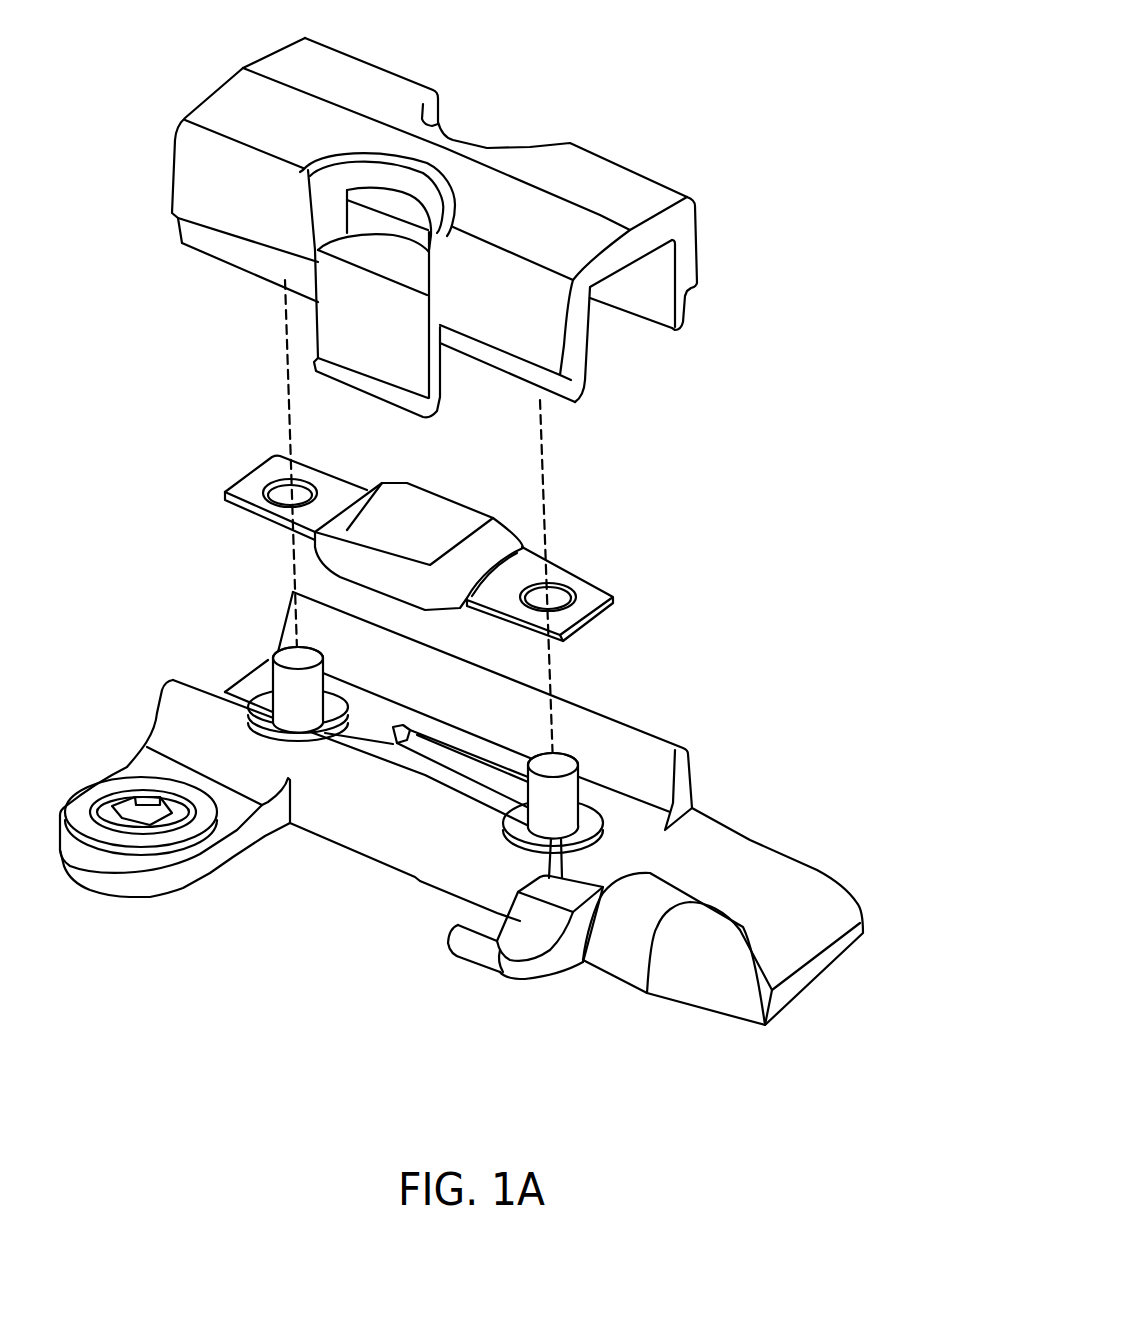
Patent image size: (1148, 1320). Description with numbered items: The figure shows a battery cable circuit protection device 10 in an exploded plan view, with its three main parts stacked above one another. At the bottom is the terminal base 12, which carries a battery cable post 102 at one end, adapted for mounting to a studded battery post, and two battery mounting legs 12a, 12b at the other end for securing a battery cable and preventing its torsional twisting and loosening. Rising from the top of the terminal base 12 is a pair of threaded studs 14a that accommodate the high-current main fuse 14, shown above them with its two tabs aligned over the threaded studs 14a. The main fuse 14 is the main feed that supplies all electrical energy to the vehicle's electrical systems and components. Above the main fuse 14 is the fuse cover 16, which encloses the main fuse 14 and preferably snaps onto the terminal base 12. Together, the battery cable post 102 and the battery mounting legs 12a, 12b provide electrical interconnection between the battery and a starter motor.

The battery cable circuit protection device 10 is at (868, 621).
The terminal base 12 is at (866, 932).
The battery mounting leg 12a is at (548, 985).
The battery mounting leg 12b is at (650, 995).
The main fuse 14 is at (453, 497).
The threaded studs 14a is at (273, 657).
The fuse cover 16 is at (628, 166).
The battery cable post 102 is at (130, 905).